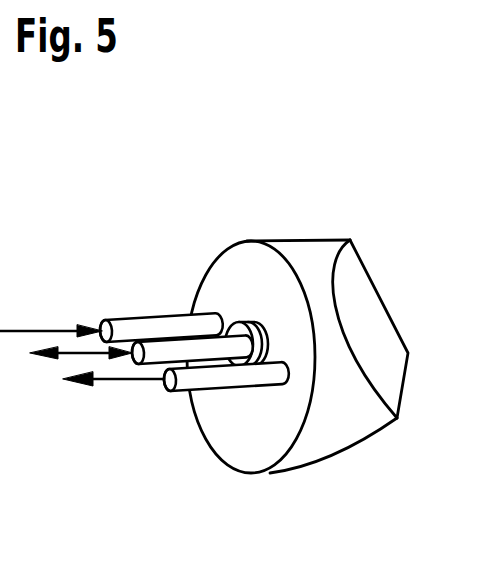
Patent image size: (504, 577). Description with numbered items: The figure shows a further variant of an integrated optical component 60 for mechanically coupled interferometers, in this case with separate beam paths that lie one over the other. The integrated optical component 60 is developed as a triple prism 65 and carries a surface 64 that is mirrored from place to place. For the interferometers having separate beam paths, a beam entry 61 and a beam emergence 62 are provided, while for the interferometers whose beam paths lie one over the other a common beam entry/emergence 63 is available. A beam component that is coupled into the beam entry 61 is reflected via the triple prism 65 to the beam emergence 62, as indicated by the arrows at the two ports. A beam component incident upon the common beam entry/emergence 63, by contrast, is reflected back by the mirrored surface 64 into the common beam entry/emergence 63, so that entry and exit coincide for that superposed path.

The integrated optical component 60 is at (190, 215).
The beam entry 61 is at (37, 328).
The beam emergence 62 is at (158, 381).
The common beam entry/emergence 63 is at (68, 356).
The mirrored surface 64 is at (233, 332).
The triple prism 65 is at (362, 317).